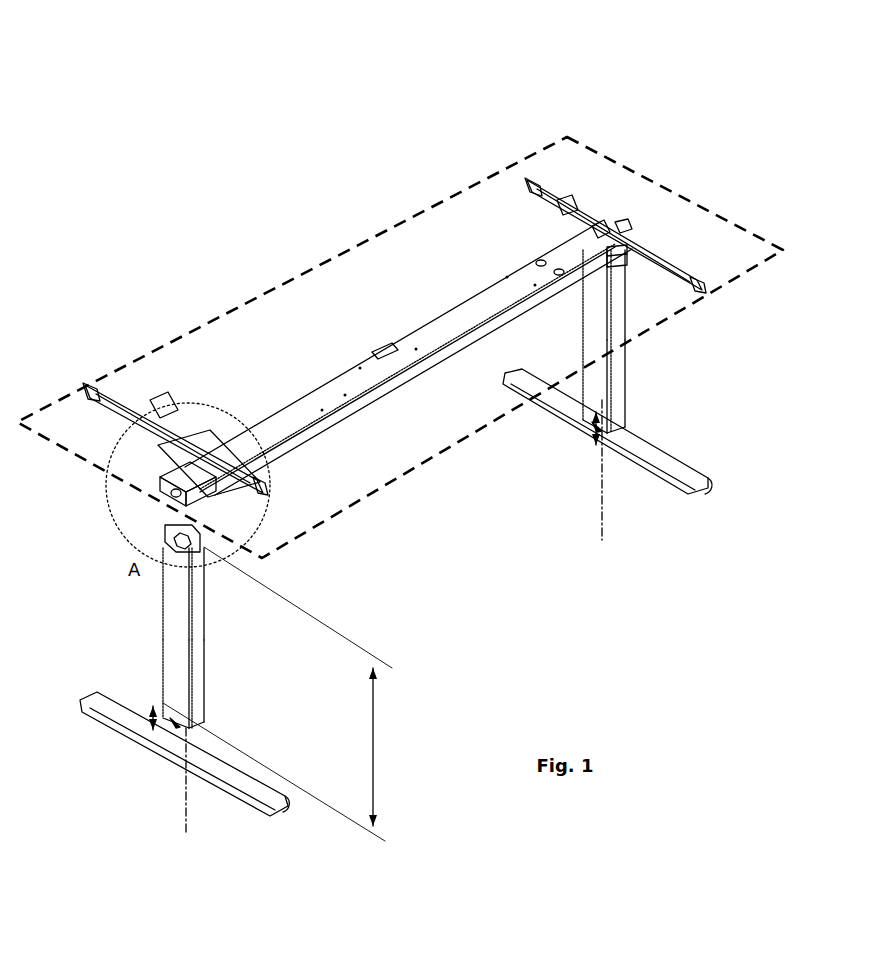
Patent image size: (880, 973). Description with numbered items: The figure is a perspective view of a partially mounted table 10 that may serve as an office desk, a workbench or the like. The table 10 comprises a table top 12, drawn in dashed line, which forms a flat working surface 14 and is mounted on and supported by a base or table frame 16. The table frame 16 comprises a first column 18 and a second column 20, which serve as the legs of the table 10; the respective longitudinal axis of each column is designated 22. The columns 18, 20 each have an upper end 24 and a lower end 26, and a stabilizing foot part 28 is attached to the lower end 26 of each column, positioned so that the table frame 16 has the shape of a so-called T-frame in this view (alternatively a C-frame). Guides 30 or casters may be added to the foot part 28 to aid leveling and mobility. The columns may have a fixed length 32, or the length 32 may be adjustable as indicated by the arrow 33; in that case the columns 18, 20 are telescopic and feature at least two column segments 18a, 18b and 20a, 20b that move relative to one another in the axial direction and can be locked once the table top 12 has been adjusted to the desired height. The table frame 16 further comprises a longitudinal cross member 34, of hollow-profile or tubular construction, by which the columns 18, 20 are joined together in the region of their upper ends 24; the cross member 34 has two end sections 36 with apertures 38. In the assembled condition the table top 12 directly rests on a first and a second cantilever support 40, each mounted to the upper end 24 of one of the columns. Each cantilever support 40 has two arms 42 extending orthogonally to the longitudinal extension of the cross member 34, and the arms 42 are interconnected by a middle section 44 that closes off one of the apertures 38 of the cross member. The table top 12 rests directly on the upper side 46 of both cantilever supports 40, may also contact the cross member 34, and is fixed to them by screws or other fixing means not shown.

The table 10 is at (590, 113).
The table top 12 is at (390, 230).
The working surface 14 is at (443, 243).
The table frame 16 is at (470, 303).
The first column 18 is at (195, 640).
The column segment 18a is at (192, 727).
The column segment 18b is at (175, 600).
The second column 20 is at (612, 352).
The column segment 20a is at (585, 431).
The column segment 20b is at (592, 326).
The longitudinal axis 22 is at (185, 795).
The upper end 24 is at (153, 543).
The lower end 26 is at (214, 710).
The foot part 28 is at (240, 778).
The guides 30 is at (274, 814).
The length 32 is at (377, 728).
The arrow 33 is at (142, 718).
The longitudinal cross member 34 is at (345, 383).
The end section 36 is at (173, 468).
The aperture 38 is at (158, 489).
The cantilever support 40 is at (138, 386).
The arm 42 is at (100, 378).
The middle section 44 is at (173, 447).
The upper side 46 is at (160, 408).